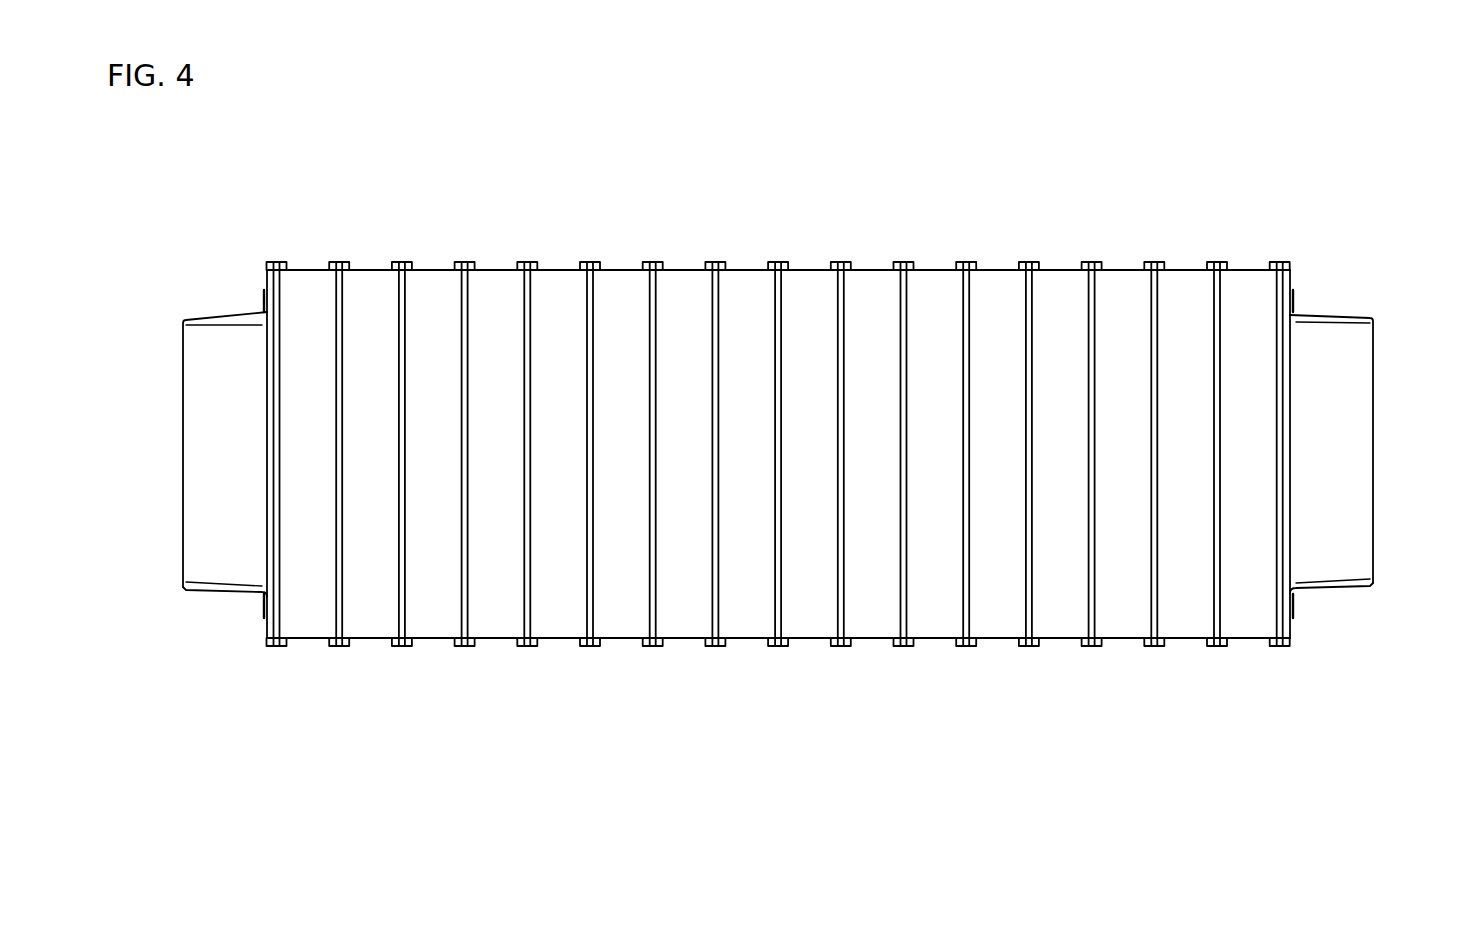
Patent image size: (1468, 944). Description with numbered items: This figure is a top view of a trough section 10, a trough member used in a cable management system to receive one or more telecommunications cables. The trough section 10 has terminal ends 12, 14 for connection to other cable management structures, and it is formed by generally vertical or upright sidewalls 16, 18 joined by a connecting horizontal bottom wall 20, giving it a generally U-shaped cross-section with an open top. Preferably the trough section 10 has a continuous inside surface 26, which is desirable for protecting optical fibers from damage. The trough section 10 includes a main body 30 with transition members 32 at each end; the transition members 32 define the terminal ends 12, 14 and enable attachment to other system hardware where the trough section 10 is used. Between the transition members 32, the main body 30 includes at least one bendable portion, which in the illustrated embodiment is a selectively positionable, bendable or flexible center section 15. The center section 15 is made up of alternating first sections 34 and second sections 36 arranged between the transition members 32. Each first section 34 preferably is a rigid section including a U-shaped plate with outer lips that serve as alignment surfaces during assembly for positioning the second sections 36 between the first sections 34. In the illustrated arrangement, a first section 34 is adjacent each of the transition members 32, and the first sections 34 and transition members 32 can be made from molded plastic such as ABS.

The trough section 10 is at (426, 677).
The terminal end 12 is at (185, 510).
The terminal end 14 is at (1373, 386).
The center section 15 is at (714, 260).
The sidewall 16 is at (738, 290).
The sidewall 18 is at (928, 620).
The bottom wall 20 is at (868, 427).
The inside surface 26 is at (1113, 367).
The main body 30 is at (1252, 642).
The transition member 32 is at (225, 592).
The first section 34 is at (402, 268).
The second section 36 is at (303, 268).